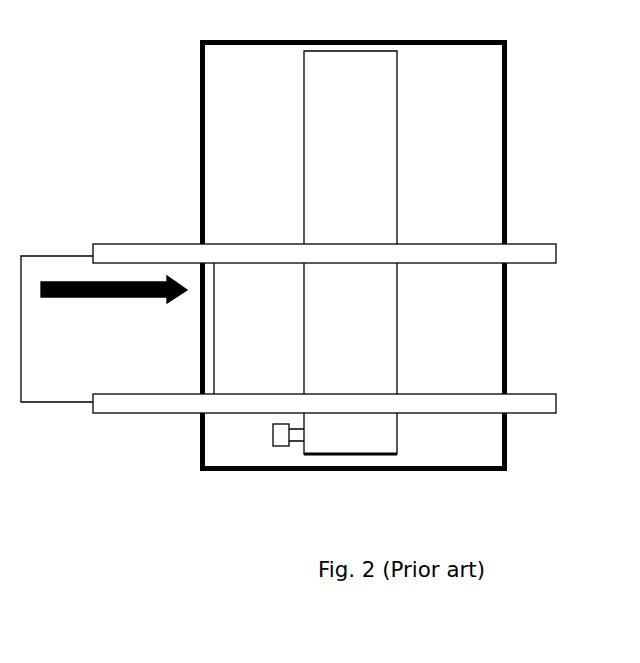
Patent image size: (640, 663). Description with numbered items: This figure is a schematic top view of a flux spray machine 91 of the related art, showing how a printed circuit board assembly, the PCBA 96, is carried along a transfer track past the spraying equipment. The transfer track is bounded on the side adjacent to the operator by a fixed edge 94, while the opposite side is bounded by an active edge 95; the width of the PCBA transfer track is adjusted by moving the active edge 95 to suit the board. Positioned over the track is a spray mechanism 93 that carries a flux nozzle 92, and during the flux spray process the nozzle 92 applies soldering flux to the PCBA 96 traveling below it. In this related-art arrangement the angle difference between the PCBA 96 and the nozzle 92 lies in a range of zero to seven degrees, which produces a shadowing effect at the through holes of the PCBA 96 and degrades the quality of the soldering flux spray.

The flux spray machine 91 is at (508, 85).
The flux nozzle 92 is at (281, 447).
The spray mechanism 93 is at (391, 441).
The fixed edge 94 is at (525, 392).
The active edge 95 is at (527, 243).
The PCBA 96 is at (42, 392).